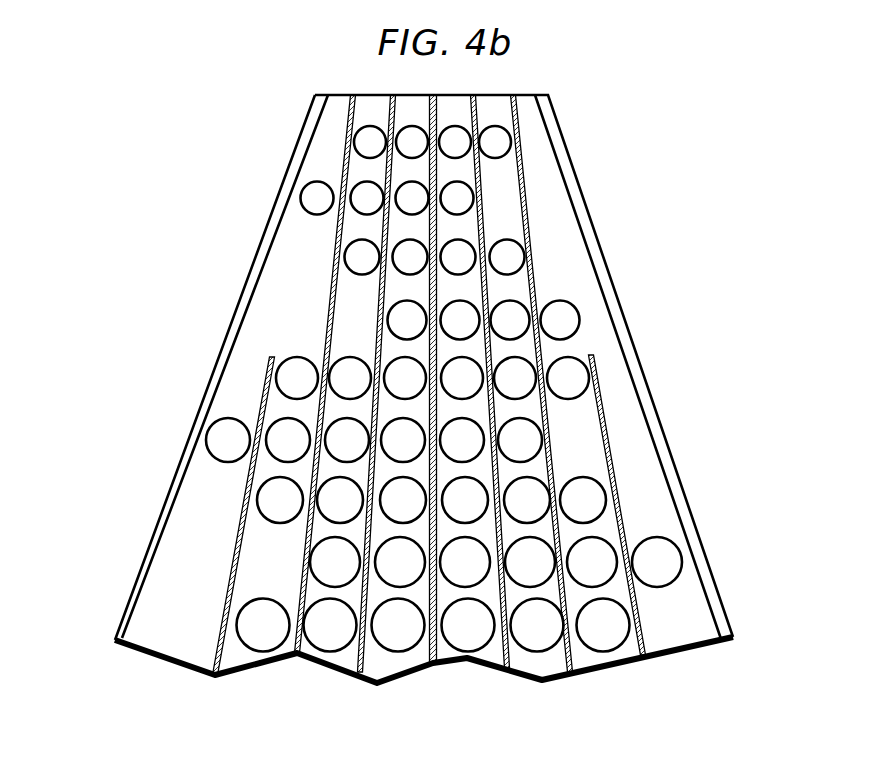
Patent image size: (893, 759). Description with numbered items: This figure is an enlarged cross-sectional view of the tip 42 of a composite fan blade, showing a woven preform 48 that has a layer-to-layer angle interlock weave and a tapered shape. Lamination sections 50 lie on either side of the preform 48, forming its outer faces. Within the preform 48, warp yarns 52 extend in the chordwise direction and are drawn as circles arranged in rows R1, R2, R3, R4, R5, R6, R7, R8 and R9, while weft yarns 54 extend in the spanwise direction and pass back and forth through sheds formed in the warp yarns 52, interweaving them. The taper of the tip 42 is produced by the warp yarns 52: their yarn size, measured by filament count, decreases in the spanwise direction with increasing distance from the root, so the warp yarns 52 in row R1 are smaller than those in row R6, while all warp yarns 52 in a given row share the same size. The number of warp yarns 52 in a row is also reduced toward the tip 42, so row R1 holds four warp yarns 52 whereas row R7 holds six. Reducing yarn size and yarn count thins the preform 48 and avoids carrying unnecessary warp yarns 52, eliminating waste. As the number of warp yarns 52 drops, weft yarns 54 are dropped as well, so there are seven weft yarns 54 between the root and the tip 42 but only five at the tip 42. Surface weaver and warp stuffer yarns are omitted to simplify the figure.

The tip 42 is at (630, 107).
The preform 48 is at (195, 584).
The lamination sections 50 is at (240, 308).
The warp yarns 52 is at (485, 389).
The weft yarns 54 is at (227, 662).
The row R1 is at (361, 150).
The row R2 is at (308, 206).
The row R3 is at (353, 265).
The row R4 is at (397, 329).
The row R5 is at (286, 387).
The row R6 is at (217, 450).
The row R7 is at (268, 510).
The row R8 is at (323, 572).
The row R9 is at (250, 636).